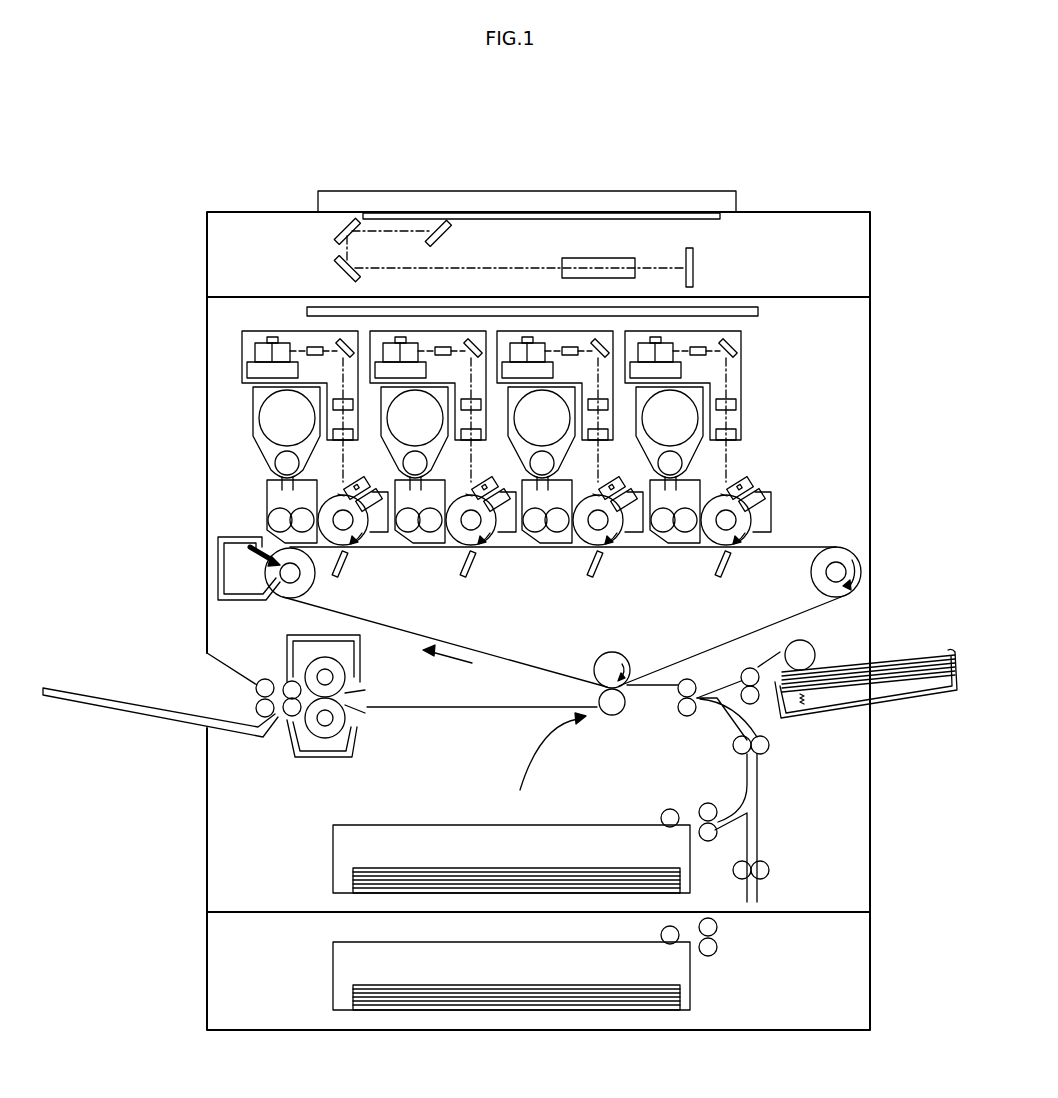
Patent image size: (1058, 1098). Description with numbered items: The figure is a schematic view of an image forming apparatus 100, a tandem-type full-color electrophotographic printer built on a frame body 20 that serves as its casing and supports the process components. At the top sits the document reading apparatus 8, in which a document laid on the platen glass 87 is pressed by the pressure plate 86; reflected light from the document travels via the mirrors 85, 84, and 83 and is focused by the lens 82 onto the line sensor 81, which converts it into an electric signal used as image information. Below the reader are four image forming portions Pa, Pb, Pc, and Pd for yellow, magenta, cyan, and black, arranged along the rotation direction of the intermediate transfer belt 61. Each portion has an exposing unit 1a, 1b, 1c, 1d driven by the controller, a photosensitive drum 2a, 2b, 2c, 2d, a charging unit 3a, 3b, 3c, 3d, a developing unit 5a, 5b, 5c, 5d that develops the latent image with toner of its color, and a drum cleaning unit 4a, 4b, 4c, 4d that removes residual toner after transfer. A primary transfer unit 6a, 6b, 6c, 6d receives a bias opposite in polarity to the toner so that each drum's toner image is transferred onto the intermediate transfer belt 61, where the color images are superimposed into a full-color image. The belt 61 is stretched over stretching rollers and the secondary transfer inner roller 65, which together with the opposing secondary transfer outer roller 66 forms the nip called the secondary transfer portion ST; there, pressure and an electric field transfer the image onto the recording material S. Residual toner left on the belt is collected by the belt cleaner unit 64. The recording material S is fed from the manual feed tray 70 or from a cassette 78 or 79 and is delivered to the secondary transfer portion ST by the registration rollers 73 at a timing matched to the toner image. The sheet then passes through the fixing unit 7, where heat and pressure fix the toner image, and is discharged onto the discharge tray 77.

The image forming apparatus 100 is at (852, 165).
The document reading apparatus 8 is at (855, 244).
The frame body 20 is at (852, 422).
The exposing unit 1a is at (265, 330).
The exposing unit 1b is at (434, 316).
The exposing unit 1c is at (555, 316).
The exposing unit 1d is at (723, 410).
The line sensor 81 is at (690, 248).
The lens 82 is at (605, 258).
The mirror 83 is at (340, 262).
The mirror 84 is at (349, 222).
The mirror 85 is at (437, 225).
The pressure plate 86 is at (598, 191).
The platen glass 87 is at (392, 213).
The photosensitive drum 2a is at (357, 548).
The photosensitive drum 2b is at (477, 554).
The photosensitive drum 2c is at (604, 555).
The photosensitive drum 2d is at (745, 547).
The charging unit 3a is at (362, 485).
The charging unit 3b is at (492, 477).
The charging unit 3c is at (619, 477).
The charging unit 3d is at (749, 470).
The drum cleaning unit 4a is at (380, 533).
The drum cleaning unit 4b is at (515, 544).
The drum cleaning unit 4c is at (641, 544).
The drum cleaning unit 4d is at (781, 488).
The developing unit 5a is at (268, 486).
The developing unit 5b is at (423, 539).
The developing unit 5c is at (549, 539).
The developing unit 5d is at (679, 539).
The primary transfer unit 6a is at (333, 566).
The primary transfer unit 6b is at (460, 594).
The primary transfer unit 6c is at (589, 593).
The primary transfer unit 6d is at (715, 593).
The image forming portion Pa is at (340, 492).
The image forming portion Pb is at (459, 473).
The image forming portion Pc is at (587, 473).
The image forming portion Pd is at (714, 473).
The intermediate transfer belt 61 is at (669, 553).
The belt cleaner unit 64 is at (232, 578).
The secondary transfer inner roller 65 is at (594, 660).
The secondary transfer outer roller 66 is at (610, 715).
The fixing unit 7 is at (325, 758).
The manual feed tray 70 is at (930, 692).
The registration rollers 73 is at (679, 713).
The discharge tray 77 is at (97, 695).
The cassette 78 is at (678, 848).
The cassette 79 is at (678, 975).
The recording material S is at (919, 655).
The secondary transfer portion ST is at (537, 763).